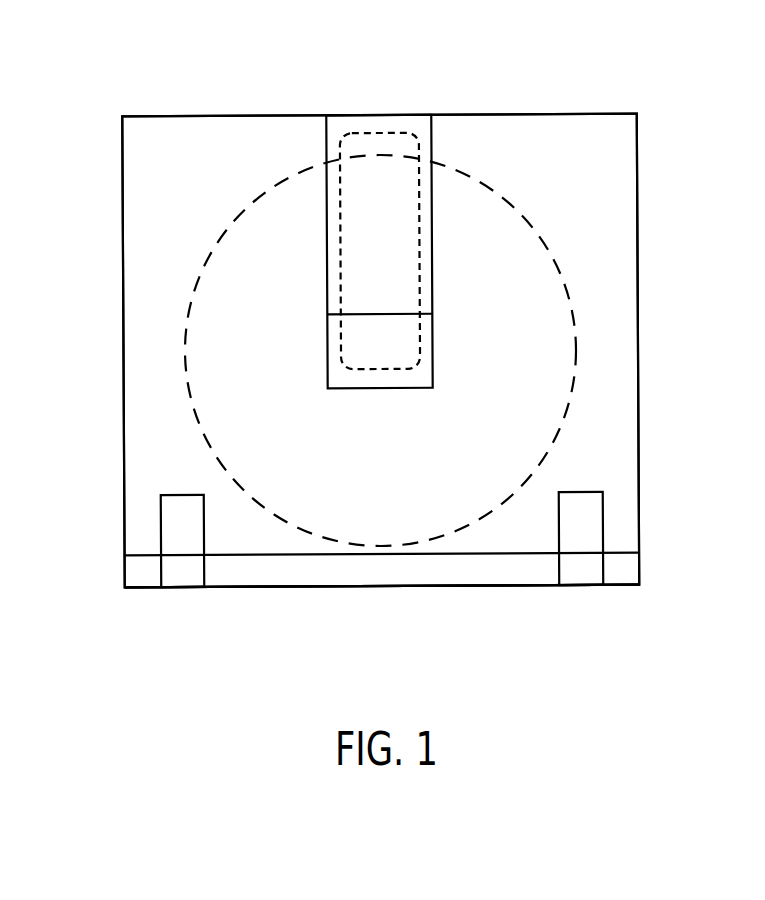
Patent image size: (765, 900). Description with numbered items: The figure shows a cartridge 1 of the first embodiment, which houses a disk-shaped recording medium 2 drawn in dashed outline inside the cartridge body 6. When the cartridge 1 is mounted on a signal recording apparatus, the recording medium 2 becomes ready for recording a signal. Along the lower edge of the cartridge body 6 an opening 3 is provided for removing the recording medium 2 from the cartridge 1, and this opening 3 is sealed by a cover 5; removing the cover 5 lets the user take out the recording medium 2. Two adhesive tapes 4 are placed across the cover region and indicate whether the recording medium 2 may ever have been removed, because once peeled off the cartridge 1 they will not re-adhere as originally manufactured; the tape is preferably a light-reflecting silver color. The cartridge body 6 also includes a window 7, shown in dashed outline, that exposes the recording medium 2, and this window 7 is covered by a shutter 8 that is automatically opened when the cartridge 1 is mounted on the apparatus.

The cartridge 1 is at (129, 100).
The recording medium 2 is at (492, 205).
The opening 3 is at (465, 555).
The adhesive tapes 4 is at (190, 577).
The cover 5 is at (347, 575).
The cartridge body 6 is at (160, 266).
The window 7 is at (400, 140).
The shutter 8 is at (363, 122).